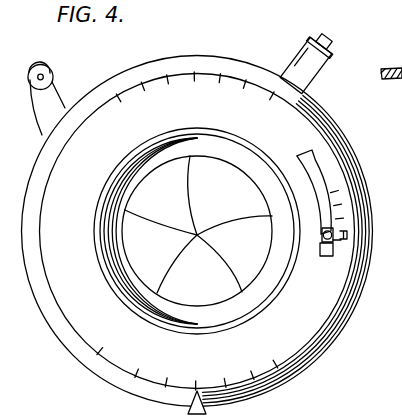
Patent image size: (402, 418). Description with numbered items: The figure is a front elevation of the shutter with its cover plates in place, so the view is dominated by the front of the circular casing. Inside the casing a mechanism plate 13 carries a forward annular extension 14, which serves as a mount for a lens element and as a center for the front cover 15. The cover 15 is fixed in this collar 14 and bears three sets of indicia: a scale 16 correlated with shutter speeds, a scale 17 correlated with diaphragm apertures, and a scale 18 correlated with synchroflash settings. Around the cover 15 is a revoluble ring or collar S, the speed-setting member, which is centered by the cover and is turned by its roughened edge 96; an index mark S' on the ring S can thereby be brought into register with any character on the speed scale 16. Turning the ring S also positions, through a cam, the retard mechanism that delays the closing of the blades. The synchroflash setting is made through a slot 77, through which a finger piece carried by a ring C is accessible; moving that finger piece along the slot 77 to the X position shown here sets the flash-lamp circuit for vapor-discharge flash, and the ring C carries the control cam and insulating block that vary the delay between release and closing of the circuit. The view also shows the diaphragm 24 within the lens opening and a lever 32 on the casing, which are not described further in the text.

The mechanism plate 13 is at (333, 222).
The forward annular extension 14 is at (273, 164).
The front cover 15 is at (323, 304).
The shutter speed indicia 16 is at (117, 78).
The diaphragm aperture indicia 17 is at (93, 340).
The synchroflash setting indicia 18 is at (333, 209).
The iris diaphragm 24 is at (197, 231).
The lever 32 is at (53, 78).
The slot 77 is at (334, 190).
The roughened edge 96 is at (245, 56).
The ring C is at (321, 251).
The speed-setting ring S is at (341, 355).
The index mark S' is at (190, 48).